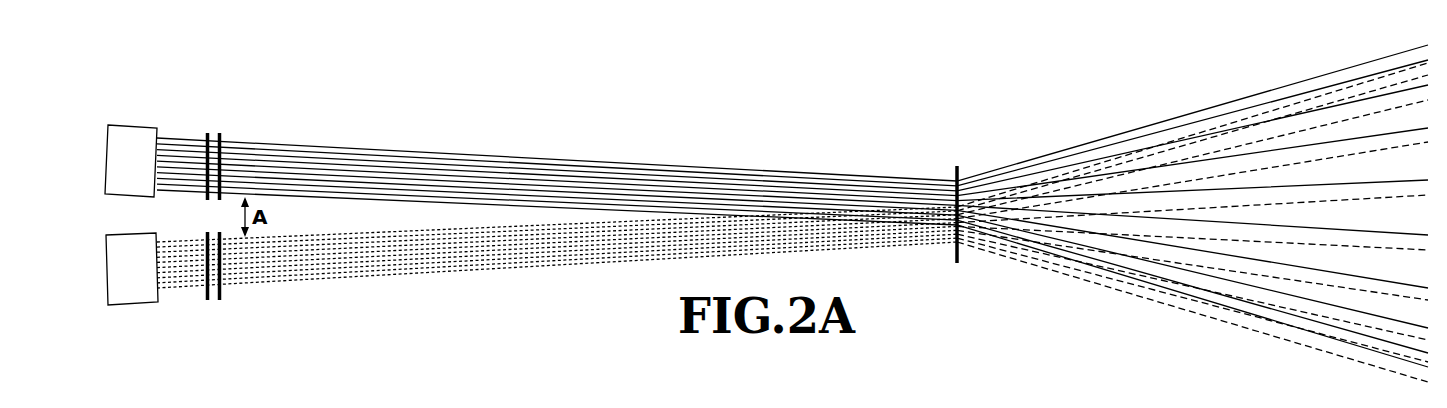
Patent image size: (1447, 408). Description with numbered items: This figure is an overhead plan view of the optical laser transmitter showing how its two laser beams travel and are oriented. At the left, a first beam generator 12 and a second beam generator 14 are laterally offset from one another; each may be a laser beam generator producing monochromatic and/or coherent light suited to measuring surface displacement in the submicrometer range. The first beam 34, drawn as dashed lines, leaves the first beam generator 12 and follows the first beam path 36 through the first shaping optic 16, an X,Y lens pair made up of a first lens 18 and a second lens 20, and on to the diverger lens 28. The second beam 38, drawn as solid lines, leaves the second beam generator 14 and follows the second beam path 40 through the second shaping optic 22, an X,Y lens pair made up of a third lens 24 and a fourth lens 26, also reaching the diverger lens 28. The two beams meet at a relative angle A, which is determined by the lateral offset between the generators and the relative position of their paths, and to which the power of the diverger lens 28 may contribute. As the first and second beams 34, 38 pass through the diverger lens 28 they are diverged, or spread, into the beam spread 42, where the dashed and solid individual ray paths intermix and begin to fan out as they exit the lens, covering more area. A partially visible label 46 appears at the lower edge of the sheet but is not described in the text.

The first beam generator 12 is at (98, 286).
The second beam generator 14 is at (98, 148).
The first shaping optic 16 is at (219, 320).
The first lens 18 is at (205, 300).
The second lens 20 is at (241, 299).
The second shaping optic 22 is at (219, 106).
The third lens 24 is at (205, 133).
The fourth lens 26 is at (241, 136).
The diverger lens 28 is at (952, 178).
The first beam 34 is at (792, 222).
The first beam path 36 is at (521, 276).
The second beam 38 is at (792, 206).
The second beam path 40 is at (521, 155).
The beam spread 42 is at (1200, 92).
The illumination target 46 is at (1148, 403).